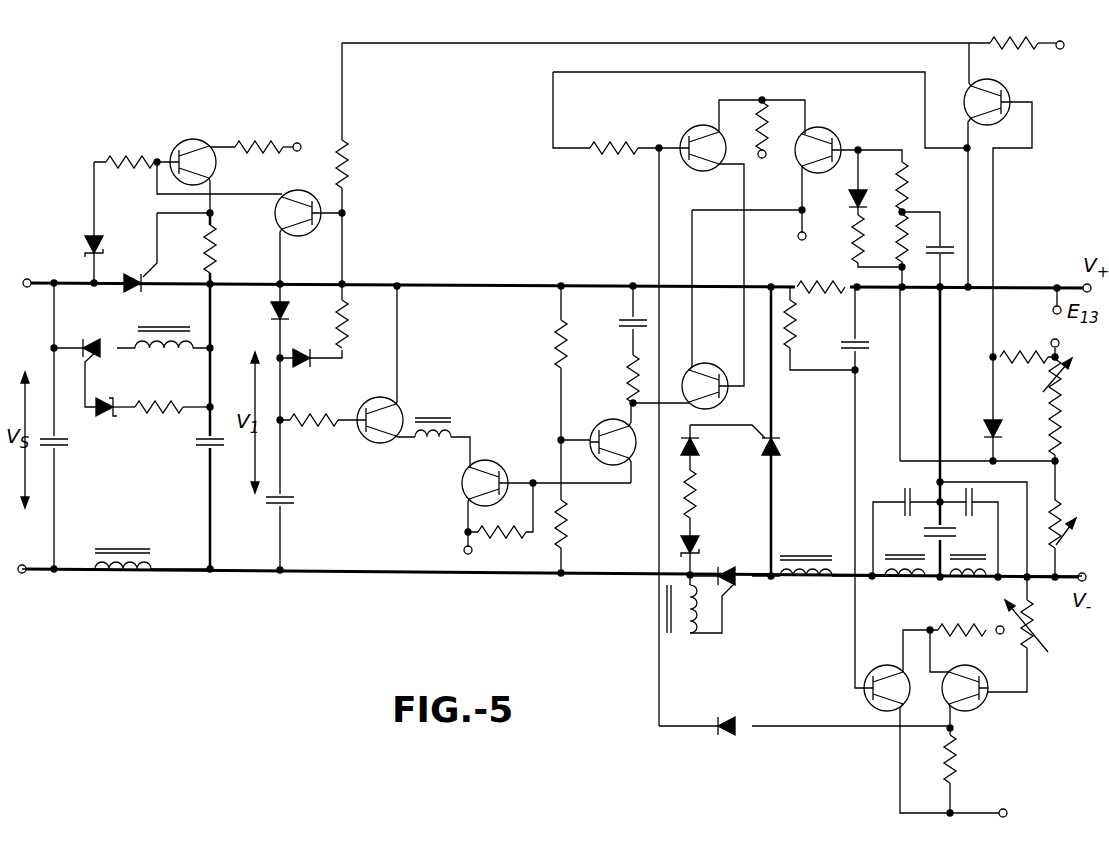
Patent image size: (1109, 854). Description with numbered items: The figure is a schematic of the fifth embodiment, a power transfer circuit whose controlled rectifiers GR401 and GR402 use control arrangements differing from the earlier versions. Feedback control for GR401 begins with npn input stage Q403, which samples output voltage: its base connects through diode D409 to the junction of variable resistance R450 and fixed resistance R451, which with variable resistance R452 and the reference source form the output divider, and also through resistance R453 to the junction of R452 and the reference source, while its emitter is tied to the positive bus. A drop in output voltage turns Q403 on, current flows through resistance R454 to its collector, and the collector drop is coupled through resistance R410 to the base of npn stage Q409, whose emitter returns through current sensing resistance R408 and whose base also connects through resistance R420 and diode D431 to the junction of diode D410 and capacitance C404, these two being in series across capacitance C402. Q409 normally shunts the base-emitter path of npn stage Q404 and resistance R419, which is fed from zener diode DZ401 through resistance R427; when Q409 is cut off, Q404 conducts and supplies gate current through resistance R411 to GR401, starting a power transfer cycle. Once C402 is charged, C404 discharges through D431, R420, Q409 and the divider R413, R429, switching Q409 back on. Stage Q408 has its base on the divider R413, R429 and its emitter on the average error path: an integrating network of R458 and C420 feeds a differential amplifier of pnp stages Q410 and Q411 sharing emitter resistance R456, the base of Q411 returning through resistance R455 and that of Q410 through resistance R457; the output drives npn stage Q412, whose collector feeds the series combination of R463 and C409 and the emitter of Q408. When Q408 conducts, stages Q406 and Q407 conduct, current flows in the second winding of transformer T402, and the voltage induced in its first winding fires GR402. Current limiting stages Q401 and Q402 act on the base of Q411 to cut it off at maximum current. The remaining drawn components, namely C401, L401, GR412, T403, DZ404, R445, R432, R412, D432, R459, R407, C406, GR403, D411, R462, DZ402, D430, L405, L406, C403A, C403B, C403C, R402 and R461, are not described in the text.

The capacitor C401 is at (71, 459).
The inductor L401 is at (116, 579).
The resistance R419 is at (232, 249).
The capacitance C402 is at (191, 456).
The controlled rectifier GR412 is at (94, 362).
The transformer T403 is at (503, 460).
The zener diode DZ404 is at (117, 422).
The resistor R445 is at (172, 395).
The controlled rectifier GR401 is at (160, 265).
The zener diode DZ401 is at (121, 224).
The resistance R427 is at (132, 149).
The npn stage Q404 is at (219, 165).
The resistance R411 is at (280, 147).
The npn stage Q409 is at (310, 229).
The resistance R410 is at (663, 165).
The diode D410 is at (303, 428).
The diode D431 is at (311, 373).
The resistance R420 is at (364, 316).
The capacitance C404 is at (299, 495).
The resistor R432 is at (318, 433).
The stage Q407 is at (386, 380).
The transformer T402 is at (575, 535).
The stage Q406 is at (529, 503).
The resistor R412 is at (500, 524).
The divider resistance R413 is at (542, 344).
The divider resistance R429 is at (584, 528).
The stage Q408 is at (598, 443).
The capacitance C409 is at (617, 319).
The resistance R463 is at (639, 380).
The npn stage Q412 is at (713, 286).
The resistance R455 is at (635, 420).
The pnp stage Q411 is at (736, 135).
The resistance R456 is at (782, 142).
The pnp stage Q410 is at (797, 187).
The diode D432 is at (843, 182).
The resistor R459 is at (862, 242).
The resistance R457 is at (923, 188).
The resistance R458 is at (887, 251).
The capacitance C420 is at (928, 251).
The npn input stage Q403 is at (1006, 200).
The resistance R454 is at (1042, 47).
The current sensing resistance R408 is at (814, 273).
The resistor R407 is at (819, 328).
The capacitor C406 is at (873, 487).
The diode D409 is at (977, 375).
The resistance R453 is at (1048, 342).
The variable resistance R452 is at (1076, 381).
The fixed resistance R451 is at (1077, 435).
The variable resistance R450 is at (1076, 520).
The controlled rectifier GR403 is at (765, 433).
The diode D411 is at (715, 447).
The resistor R462 is at (715, 503).
The zener diode DZ402 is at (722, 557).
The controlled rectifier GR402 is at (742, 592).
The diode D430 is at (804, 745).
The inductor L405 is at (911, 584).
The inductor L406 is at (1014, 581).
The capacitor C403A is at (903, 523).
The capacitor C403B is at (983, 529).
The capacitor C403C is at (965, 533).
The potentiometer R402 is at (1034, 634).
The current limiting stage Q401 is at (980, 681).
The current limiting stage Q402 is at (936, 732).
The resistor R461 is at (972, 770).